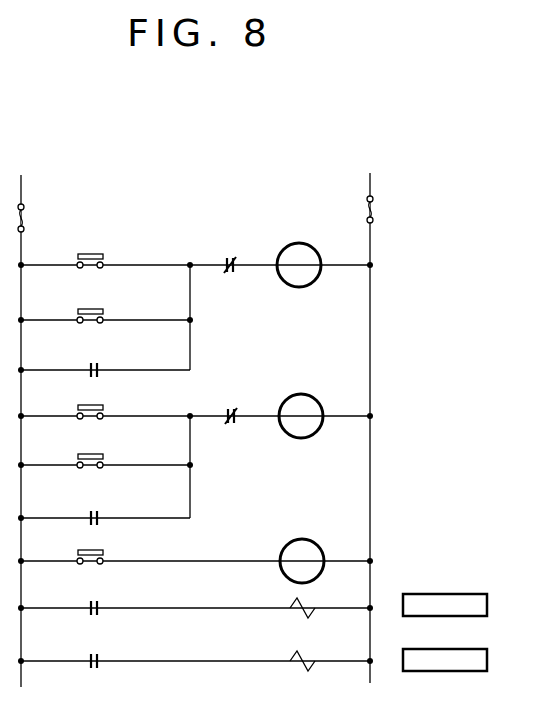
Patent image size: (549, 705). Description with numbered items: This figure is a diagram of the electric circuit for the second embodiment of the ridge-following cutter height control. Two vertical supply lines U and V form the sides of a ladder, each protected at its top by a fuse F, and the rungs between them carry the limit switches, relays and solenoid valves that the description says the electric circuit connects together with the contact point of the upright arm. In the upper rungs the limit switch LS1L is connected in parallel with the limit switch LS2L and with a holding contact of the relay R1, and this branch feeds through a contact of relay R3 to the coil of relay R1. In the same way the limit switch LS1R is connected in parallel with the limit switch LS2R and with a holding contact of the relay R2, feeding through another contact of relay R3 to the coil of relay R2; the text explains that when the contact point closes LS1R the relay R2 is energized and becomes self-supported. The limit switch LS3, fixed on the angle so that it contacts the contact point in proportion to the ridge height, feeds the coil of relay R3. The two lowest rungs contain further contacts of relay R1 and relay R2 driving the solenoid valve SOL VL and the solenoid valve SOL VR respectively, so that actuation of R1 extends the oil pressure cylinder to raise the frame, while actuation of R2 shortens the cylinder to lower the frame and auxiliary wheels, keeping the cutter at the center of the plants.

The supply line U is at (21, 420).
The supply line V is at (370, 418).
The fuse F is at (202, 214).
The limit switch LS1L is at (91, 252).
The limit switch LS2L is at (91, 307).
The limit switch LS1R is at (92, 403).
The limit switch LS2R is at (92, 452).
The limit switch LS3 is at (90, 548).
The relay R1 is at (201, 429).
The relay R2 is at (202, 531).
The relay R3 (coil and contacts) R3 is at (271, 409).
The solenoid valve SOL VL is at (388, 606).
The solenoid valve SOL VR is at (388, 660).